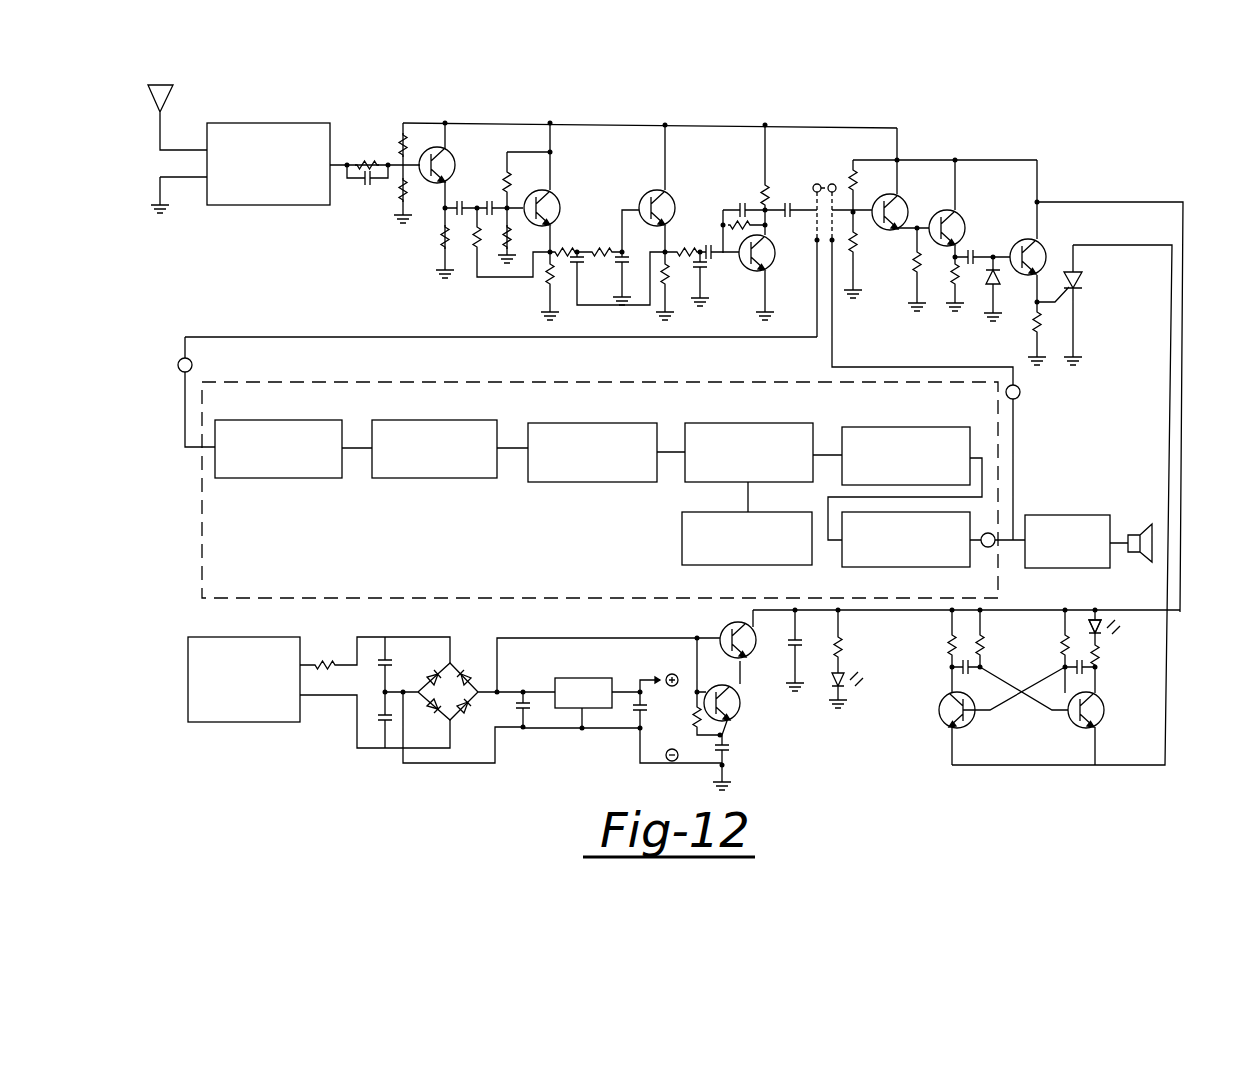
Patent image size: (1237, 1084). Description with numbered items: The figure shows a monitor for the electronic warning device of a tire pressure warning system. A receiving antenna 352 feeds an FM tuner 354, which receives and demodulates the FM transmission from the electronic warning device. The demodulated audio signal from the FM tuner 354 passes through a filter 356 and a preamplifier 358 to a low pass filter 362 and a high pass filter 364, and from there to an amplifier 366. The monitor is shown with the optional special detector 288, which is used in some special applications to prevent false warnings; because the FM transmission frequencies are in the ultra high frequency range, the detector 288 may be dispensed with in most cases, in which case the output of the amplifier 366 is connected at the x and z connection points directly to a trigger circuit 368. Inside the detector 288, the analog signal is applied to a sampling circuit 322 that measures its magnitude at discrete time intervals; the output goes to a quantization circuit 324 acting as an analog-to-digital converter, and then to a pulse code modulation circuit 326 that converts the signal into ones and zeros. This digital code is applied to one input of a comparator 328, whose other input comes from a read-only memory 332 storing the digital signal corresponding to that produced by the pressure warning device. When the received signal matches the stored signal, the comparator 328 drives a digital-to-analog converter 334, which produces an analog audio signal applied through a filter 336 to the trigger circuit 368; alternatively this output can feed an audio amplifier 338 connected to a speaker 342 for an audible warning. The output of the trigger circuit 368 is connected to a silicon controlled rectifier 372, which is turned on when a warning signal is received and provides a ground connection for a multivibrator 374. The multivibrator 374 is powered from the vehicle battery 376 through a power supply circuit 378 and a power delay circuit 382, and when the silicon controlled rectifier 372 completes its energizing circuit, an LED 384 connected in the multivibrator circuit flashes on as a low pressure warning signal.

The receiving antenna 352 is at (174, 116).
The FM tuner 354 is at (291, 123).
The filter 356 is at (381, 142).
The preamplifier 358 is at (446, 137).
The low pass filter 362 is at (566, 210).
The high pass filter 364 is at (688, 212).
The amplifier 366 is at (779, 206).
The trigger circuit 368 is at (972, 172).
The SCR 372 is at (1072, 279).
The special detector 288 is at (365, 382).
The sampling circuit 322 is at (274, 420).
The quantization circuit 324 is at (428, 420).
The pulse code modulation circuit 326 is at (576, 423).
The comparator 328 is at (748, 423).
The read-only memory 332 is at (682, 522).
The digital-to-analog converter 334 is at (900, 427).
The filter 336 is at (885, 567).
The audio amplifier 338 is at (1045, 515).
The speaker 342 is at (1140, 555).
The multivibrator 374 is at (1010, 638).
The vehicle battery 376 is at (207, 722).
The power supply circuit 378 is at (413, 635).
The power delay circuit 382 is at (640, 656).
The LED 384 is at (1103, 628).